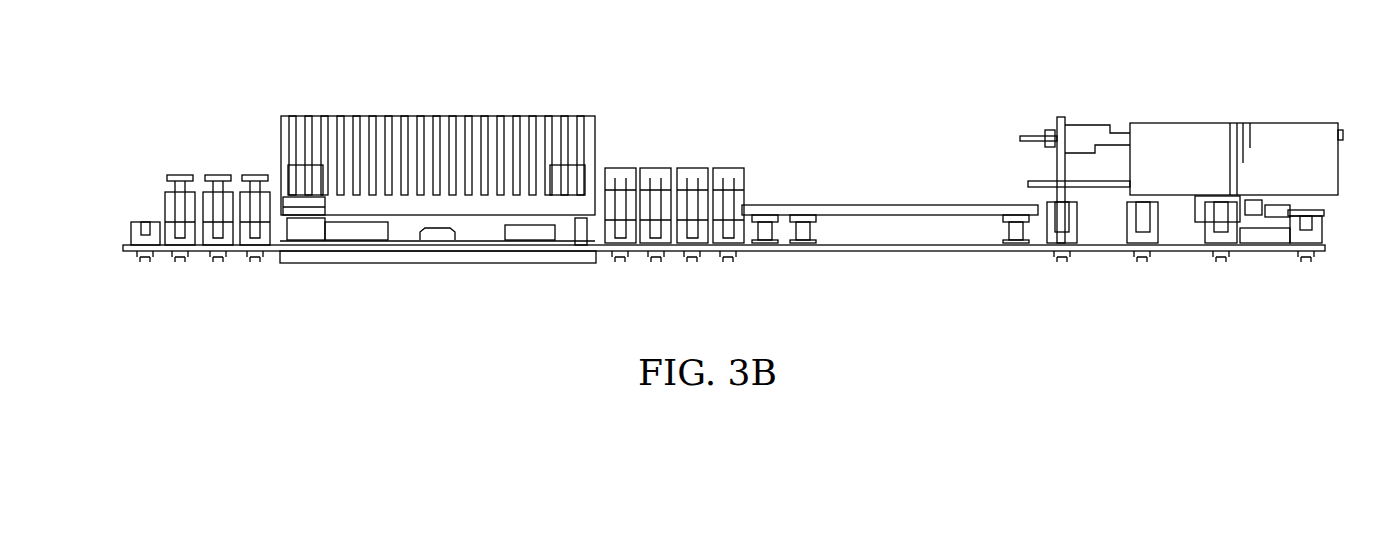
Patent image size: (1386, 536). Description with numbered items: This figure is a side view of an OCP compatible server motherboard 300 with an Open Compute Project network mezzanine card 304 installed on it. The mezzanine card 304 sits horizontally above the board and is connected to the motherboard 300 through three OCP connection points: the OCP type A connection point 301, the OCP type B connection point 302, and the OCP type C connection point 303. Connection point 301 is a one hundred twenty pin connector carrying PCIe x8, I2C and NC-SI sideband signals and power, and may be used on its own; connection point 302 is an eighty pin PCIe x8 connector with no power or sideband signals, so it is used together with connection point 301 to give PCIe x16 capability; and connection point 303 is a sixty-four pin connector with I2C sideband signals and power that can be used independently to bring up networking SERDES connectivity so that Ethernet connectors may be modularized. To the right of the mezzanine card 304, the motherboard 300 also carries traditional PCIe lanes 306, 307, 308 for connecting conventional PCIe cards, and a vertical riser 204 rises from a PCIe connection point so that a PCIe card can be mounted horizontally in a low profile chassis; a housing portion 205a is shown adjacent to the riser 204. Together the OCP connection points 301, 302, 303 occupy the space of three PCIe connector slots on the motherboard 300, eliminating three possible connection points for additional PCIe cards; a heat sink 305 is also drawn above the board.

The server motherboard 300 is at (947, 252).
The OCP type A connection point 301 is at (1000, 250).
The OCP type B connection point 302 is at (775, 250).
The OCP type C connection point 303 is at (820, 250).
The OCP network mezzanine card 304 is at (895, 203).
The heat sink 305 is at (428, 113).
The PCIe lane 306 is at (1200, 252).
The PCIe lane 307 is at (1118, 252).
The PCIe lane 308 is at (1038, 252).
The vertical riser 204 is at (1062, 115).
The housing portion 205a is at (1292, 133).